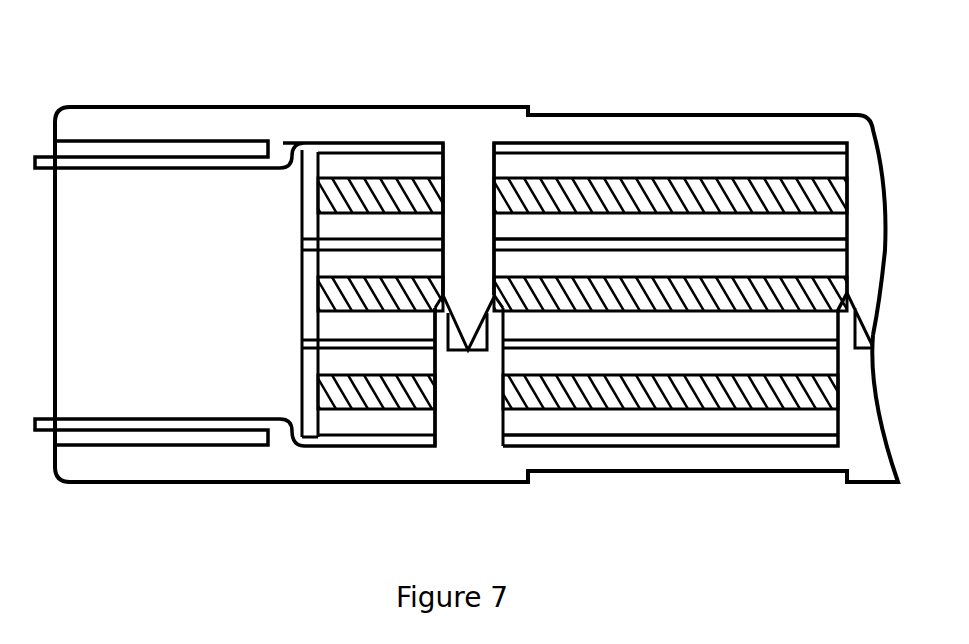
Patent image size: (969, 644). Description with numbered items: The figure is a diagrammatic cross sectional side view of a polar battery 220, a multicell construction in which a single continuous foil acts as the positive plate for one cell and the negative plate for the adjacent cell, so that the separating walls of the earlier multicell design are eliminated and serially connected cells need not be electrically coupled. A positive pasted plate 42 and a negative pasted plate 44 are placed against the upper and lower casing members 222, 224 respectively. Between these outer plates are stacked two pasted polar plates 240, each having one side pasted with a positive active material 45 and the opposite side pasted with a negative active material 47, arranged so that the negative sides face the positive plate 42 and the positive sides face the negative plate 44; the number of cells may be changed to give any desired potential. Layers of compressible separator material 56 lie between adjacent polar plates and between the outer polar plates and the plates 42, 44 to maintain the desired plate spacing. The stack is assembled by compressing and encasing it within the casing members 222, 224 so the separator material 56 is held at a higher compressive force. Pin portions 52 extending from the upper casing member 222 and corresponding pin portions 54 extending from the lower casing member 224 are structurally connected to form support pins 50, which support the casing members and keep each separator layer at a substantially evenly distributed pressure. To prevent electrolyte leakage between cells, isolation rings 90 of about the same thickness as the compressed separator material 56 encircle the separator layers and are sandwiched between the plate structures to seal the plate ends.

The polar battery 220 is at (466, 277).
The upper casing member 222 is at (785, 130).
The lower casing member 224 is at (762, 458).
The positive pasted plate 42 is at (553, 147).
The negative pasted plate 44 is at (573, 442).
The positive active material 45 is at (412, 362).
The negative active material 47 is at (720, 228).
The support pin 50 is at (477, 188).
The pin portion 52 is at (458, 162).
The pin portion 54 is at (462, 420).
The compressible separator material 56 is at (655, 395).
The isolation ring 90 is at (310, 195).
The polar plate 240 is at (303, 240).